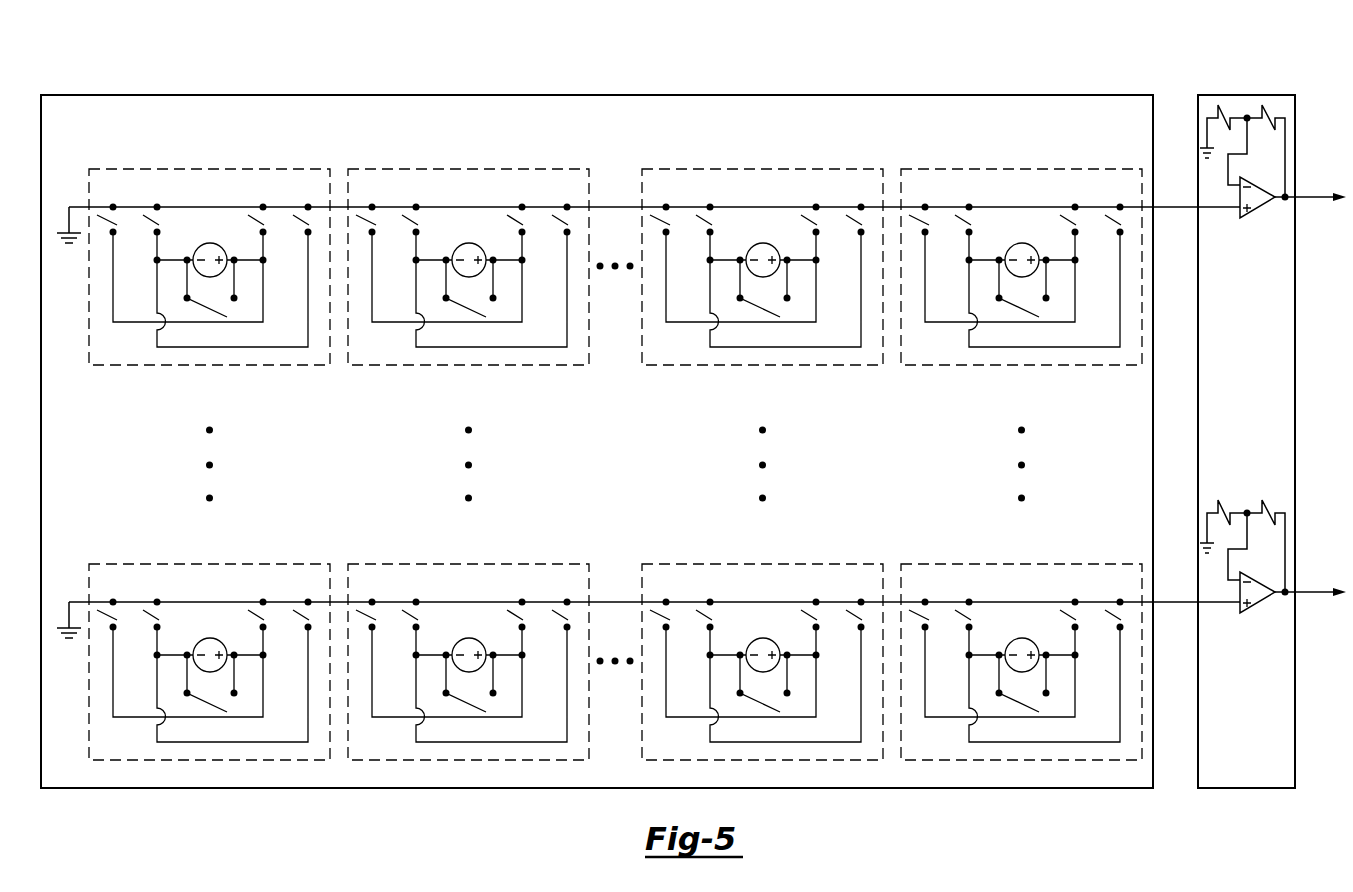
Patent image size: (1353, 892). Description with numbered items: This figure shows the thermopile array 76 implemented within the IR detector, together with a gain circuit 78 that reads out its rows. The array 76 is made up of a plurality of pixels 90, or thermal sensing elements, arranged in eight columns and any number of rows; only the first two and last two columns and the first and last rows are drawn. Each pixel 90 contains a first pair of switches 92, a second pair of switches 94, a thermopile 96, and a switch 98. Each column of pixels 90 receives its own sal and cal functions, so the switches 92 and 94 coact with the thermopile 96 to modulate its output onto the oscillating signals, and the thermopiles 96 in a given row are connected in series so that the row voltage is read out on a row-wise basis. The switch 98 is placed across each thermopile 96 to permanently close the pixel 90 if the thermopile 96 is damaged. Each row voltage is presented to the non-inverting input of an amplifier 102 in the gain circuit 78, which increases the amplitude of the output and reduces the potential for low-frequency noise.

The thermopile array 76 is at (1062, 94).
The gain circuit 78 is at (1243, 95).
The pixel 90 is at (615, 438).
The first pair of switches 92 is at (609, 415).
The second pair of switches 94 is at (609, 441).
The thermopile 96 is at (666, 480).
The switch 98 is at (584, 485).
The amplifier 102 is at (1262, 206).